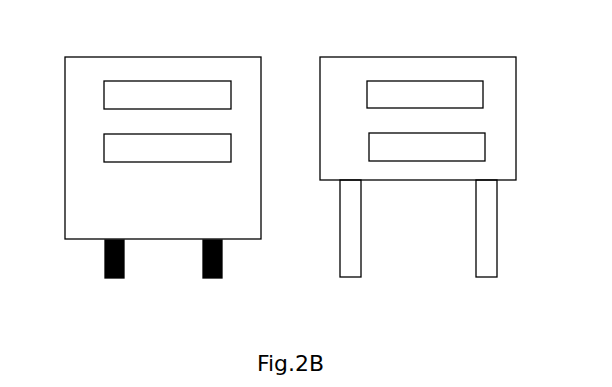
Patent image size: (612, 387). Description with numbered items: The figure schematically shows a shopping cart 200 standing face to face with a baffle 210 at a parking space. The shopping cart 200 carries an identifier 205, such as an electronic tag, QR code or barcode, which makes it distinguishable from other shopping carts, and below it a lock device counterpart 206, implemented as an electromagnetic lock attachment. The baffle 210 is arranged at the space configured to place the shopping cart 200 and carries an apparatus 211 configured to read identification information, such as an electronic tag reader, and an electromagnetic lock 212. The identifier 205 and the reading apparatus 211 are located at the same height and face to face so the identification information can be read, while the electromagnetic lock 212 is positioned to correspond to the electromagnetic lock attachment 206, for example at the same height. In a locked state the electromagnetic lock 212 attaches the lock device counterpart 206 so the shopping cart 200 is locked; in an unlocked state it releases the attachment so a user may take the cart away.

The shopping cart 200 is at (101, 44).
The identifier 205 is at (167, 95).
The lock device counterpart 206 is at (167, 148).
The baffle 210 is at (503, 44).
The apparatus configured to read identification information 211 is at (425, 94).
The electromagnetic lock 212 is at (427, 147).